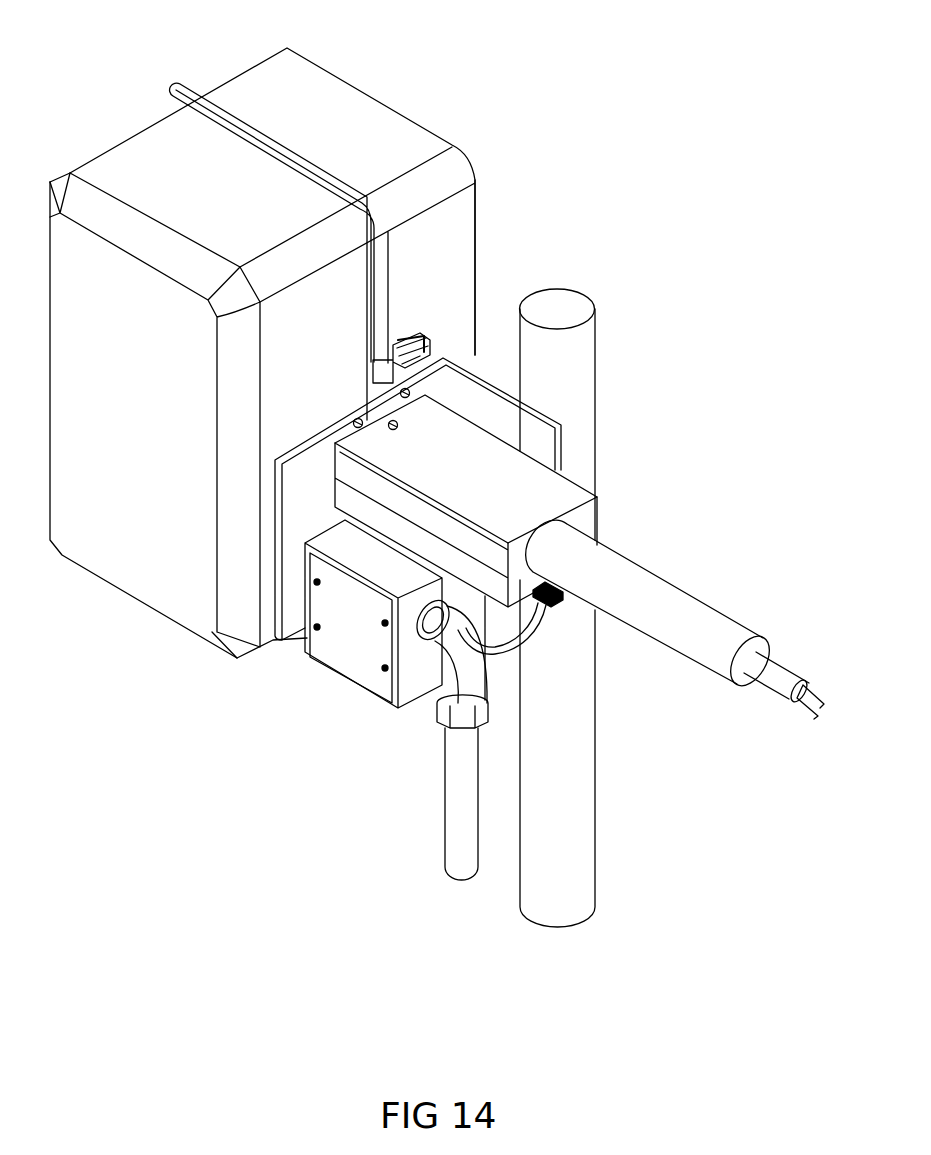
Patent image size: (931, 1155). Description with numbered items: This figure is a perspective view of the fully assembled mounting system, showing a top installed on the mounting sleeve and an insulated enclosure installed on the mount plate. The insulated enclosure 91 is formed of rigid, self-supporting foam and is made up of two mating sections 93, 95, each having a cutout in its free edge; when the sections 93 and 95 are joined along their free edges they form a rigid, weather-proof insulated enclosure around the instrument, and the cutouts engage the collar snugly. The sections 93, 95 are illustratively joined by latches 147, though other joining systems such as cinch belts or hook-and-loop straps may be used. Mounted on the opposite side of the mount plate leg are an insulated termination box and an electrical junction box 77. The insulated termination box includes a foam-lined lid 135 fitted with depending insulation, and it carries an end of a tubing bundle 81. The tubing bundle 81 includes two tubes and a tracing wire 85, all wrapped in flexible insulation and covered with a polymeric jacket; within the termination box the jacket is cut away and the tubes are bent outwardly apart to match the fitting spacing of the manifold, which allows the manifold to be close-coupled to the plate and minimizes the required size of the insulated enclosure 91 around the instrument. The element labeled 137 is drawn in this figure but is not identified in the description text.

The insulated enclosure 91 is at (348, 50).
The mating section 93 is at (393, 127).
The mating section 95 is at (153, 157).
The latches 147 is at (430, 341).
The mounting bracket 137 is at (412, 420).
The foam-lined lid 135 is at (550, 484).
The tubing bundle 81 is at (722, 610).
The tracing wire 85 is at (510, 647).
The electrical junction box 77 is at (405, 710).